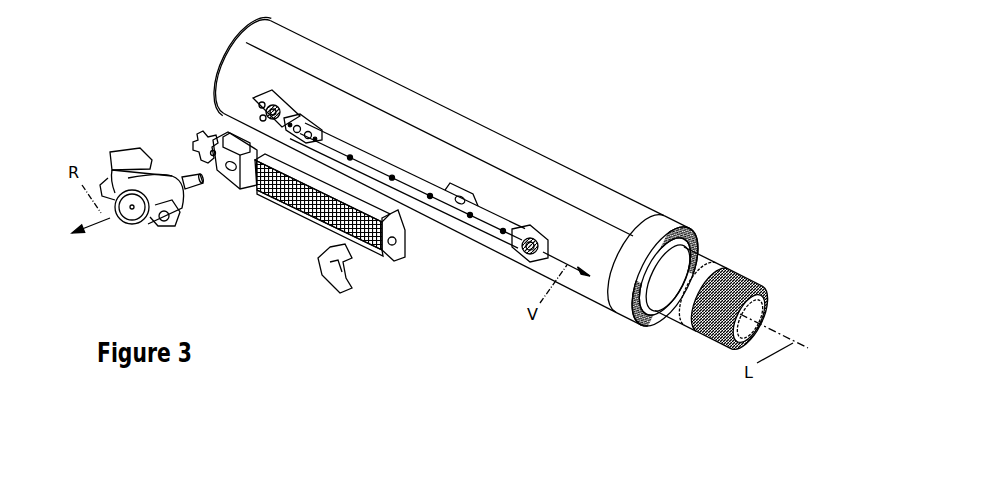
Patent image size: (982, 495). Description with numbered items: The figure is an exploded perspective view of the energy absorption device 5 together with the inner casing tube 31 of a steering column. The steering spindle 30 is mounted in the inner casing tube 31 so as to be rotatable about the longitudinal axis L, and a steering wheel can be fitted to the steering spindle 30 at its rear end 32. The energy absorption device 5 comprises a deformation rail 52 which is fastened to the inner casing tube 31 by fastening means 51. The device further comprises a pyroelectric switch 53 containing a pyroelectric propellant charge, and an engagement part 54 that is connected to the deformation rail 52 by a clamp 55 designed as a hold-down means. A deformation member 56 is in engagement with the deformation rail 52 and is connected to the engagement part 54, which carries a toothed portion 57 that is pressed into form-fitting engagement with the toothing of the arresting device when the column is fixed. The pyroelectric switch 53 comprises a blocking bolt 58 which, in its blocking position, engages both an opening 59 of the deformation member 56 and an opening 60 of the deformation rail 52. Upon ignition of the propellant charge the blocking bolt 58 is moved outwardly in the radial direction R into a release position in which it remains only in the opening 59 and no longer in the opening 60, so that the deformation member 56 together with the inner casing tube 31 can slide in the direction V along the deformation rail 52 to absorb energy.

The energy absorption device 5 is at (220, 213).
The steering spindle 30 is at (700, 272).
The inner casing tube 31 is at (602, 214).
The rear end 32 is at (748, 286).
The fastening means 51 is at (273, 110).
The deformation rail 52 is at (413, 185).
The pyroelectric switch 53 is at (138, 224).
The engagement part 54 is at (363, 252).
The clamp 55 is at (331, 270).
The deformation member 56 is at (222, 132).
The toothed portion 57 is at (353, 150).
The blocking bolt 58 is at (194, 185).
The opening 59 is at (233, 180).
The opening 60 is at (309, 130).